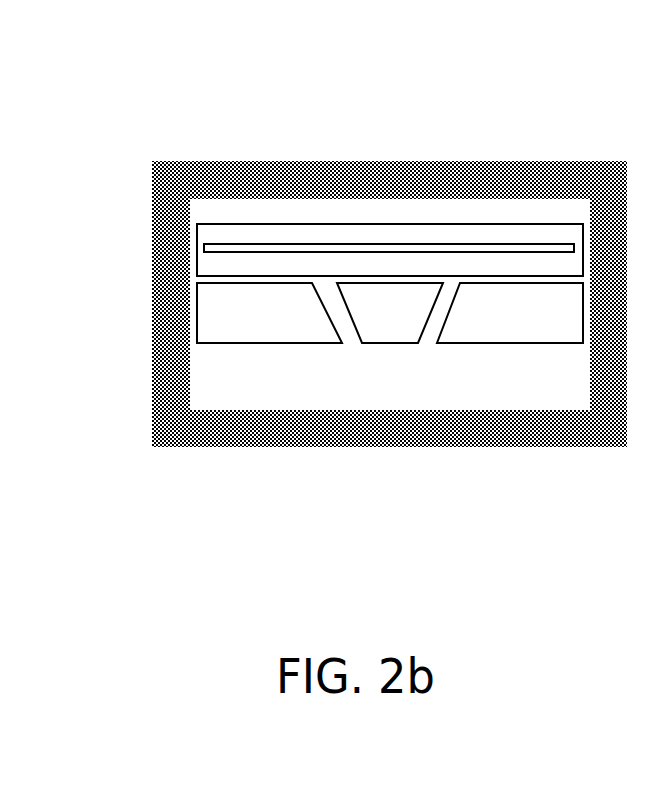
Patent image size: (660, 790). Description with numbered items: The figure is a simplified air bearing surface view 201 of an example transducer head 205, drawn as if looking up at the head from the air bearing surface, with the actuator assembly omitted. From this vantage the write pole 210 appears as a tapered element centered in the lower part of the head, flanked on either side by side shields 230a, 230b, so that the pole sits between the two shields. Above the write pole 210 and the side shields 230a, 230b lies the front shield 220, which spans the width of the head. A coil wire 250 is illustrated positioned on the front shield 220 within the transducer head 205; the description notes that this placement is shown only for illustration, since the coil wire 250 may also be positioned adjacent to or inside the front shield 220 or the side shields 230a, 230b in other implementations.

The air bearing surface (ABS) view 201 is at (494, 116).
The transducer head 205 is at (193, 160).
The front shield 220 is at (197, 248).
The coil wire 250 is at (392, 243).
The side shield 230a is at (225, 343).
The side shield 230b is at (487, 343).
The write pole 210 is at (383, 343).